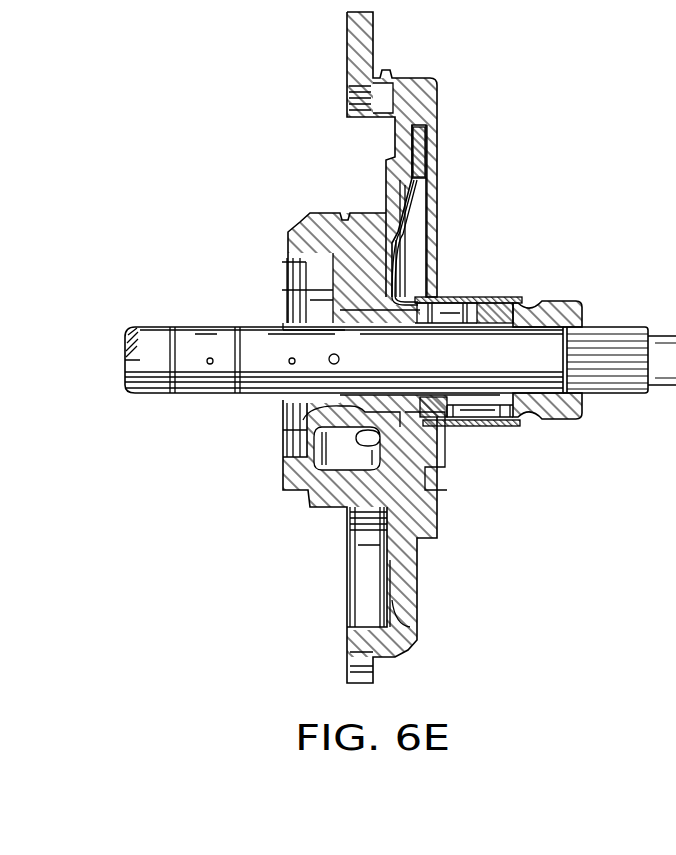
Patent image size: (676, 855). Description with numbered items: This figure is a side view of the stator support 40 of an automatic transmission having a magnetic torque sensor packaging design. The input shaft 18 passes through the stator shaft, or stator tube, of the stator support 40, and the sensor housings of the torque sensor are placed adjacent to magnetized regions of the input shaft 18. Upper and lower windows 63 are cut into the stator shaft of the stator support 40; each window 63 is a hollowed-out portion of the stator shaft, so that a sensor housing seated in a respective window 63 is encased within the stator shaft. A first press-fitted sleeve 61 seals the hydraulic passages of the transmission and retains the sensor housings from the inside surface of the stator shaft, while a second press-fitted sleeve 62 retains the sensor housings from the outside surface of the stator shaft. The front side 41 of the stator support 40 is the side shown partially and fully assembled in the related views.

The input shaft 18 is at (262, 398).
The stator support 40 is at (407, 78).
The front side 41 is at (418, 597).
The first press-fitted sleeve 61 is at (362, 318).
The second press-fitted sleeve 62 is at (483, 424).
The windows 63 is at (445, 312).